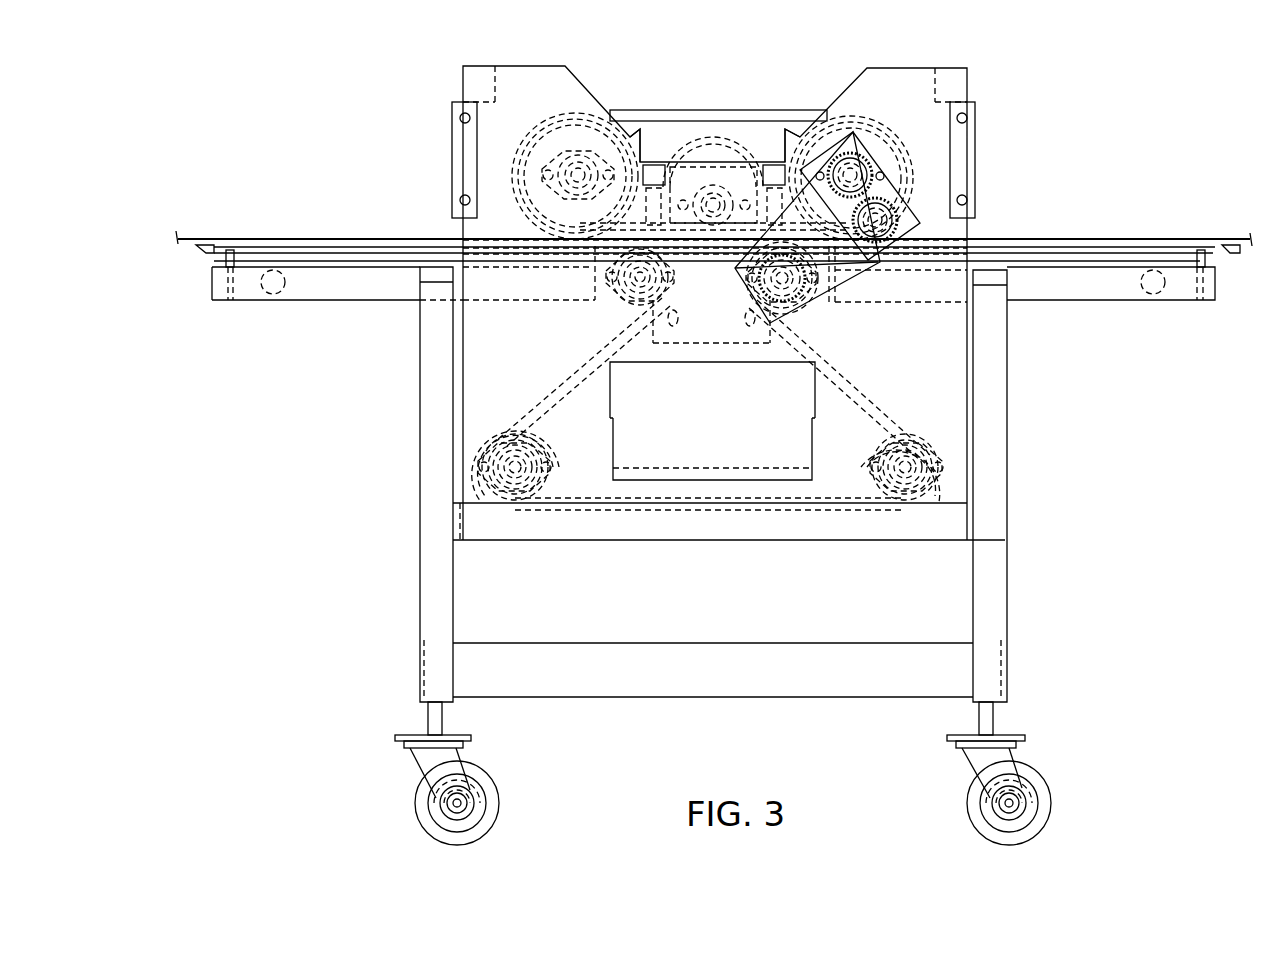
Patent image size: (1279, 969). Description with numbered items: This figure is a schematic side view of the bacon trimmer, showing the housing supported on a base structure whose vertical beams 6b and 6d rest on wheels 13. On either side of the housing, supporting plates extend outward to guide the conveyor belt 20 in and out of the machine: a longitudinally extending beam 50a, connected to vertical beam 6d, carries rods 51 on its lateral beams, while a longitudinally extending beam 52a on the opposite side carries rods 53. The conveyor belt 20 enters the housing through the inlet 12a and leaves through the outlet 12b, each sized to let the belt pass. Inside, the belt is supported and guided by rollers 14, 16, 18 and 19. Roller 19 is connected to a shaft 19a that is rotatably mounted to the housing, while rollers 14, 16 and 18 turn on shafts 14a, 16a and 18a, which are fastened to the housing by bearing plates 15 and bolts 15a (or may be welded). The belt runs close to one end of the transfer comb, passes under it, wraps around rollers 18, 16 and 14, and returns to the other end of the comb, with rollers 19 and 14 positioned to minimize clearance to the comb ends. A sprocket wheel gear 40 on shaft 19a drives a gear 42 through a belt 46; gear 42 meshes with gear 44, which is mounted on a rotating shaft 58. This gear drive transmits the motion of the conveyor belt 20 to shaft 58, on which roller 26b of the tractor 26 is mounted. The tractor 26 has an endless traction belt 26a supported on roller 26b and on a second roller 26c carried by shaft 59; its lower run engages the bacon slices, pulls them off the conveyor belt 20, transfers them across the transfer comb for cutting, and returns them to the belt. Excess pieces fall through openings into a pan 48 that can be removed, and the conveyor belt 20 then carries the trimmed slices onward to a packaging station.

The vertical beam 6b is at (418, 545).
The vertical beam 6d is at (1008, 504).
The inlet 12a is at (978, 237).
The outlet 12b is at (445, 237).
The wheels 13 is at (499, 800).
The roller 14 is at (677, 305).
The shaft 14a is at (622, 292).
The bearing plate 15 is at (680, 472).
The bolt 15a is at (476, 470).
The roller 16 is at (531, 461).
The shaft 16a is at (538, 478).
The roller 18 is at (899, 450).
The shaft 18a is at (912, 456).
The roller 19 is at (809, 302).
The shaft 19a is at (822, 292).
The conveyor belt 20 is at (327, 238).
The tractor 26 is at (718, 85).
The traction belt 26a is at (710, 108).
The roller 26b is at (848, 122).
The roller 26c is at (606, 122).
The sprocket wheel gear 40 is at (800, 297).
The gear 42 is at (898, 213).
The gear 44 is at (862, 158).
The belt 46 is at (840, 272).
The pan 48 is at (816, 416).
The longitudinally extending beam 50a is at (1096, 302).
The rods 51 is at (1232, 254).
The longitudinally extending beam 52a is at (332, 302).
The rods 53 is at (206, 254).
The shaft 58 is at (892, 168).
The shaft 59 is at (576, 160).